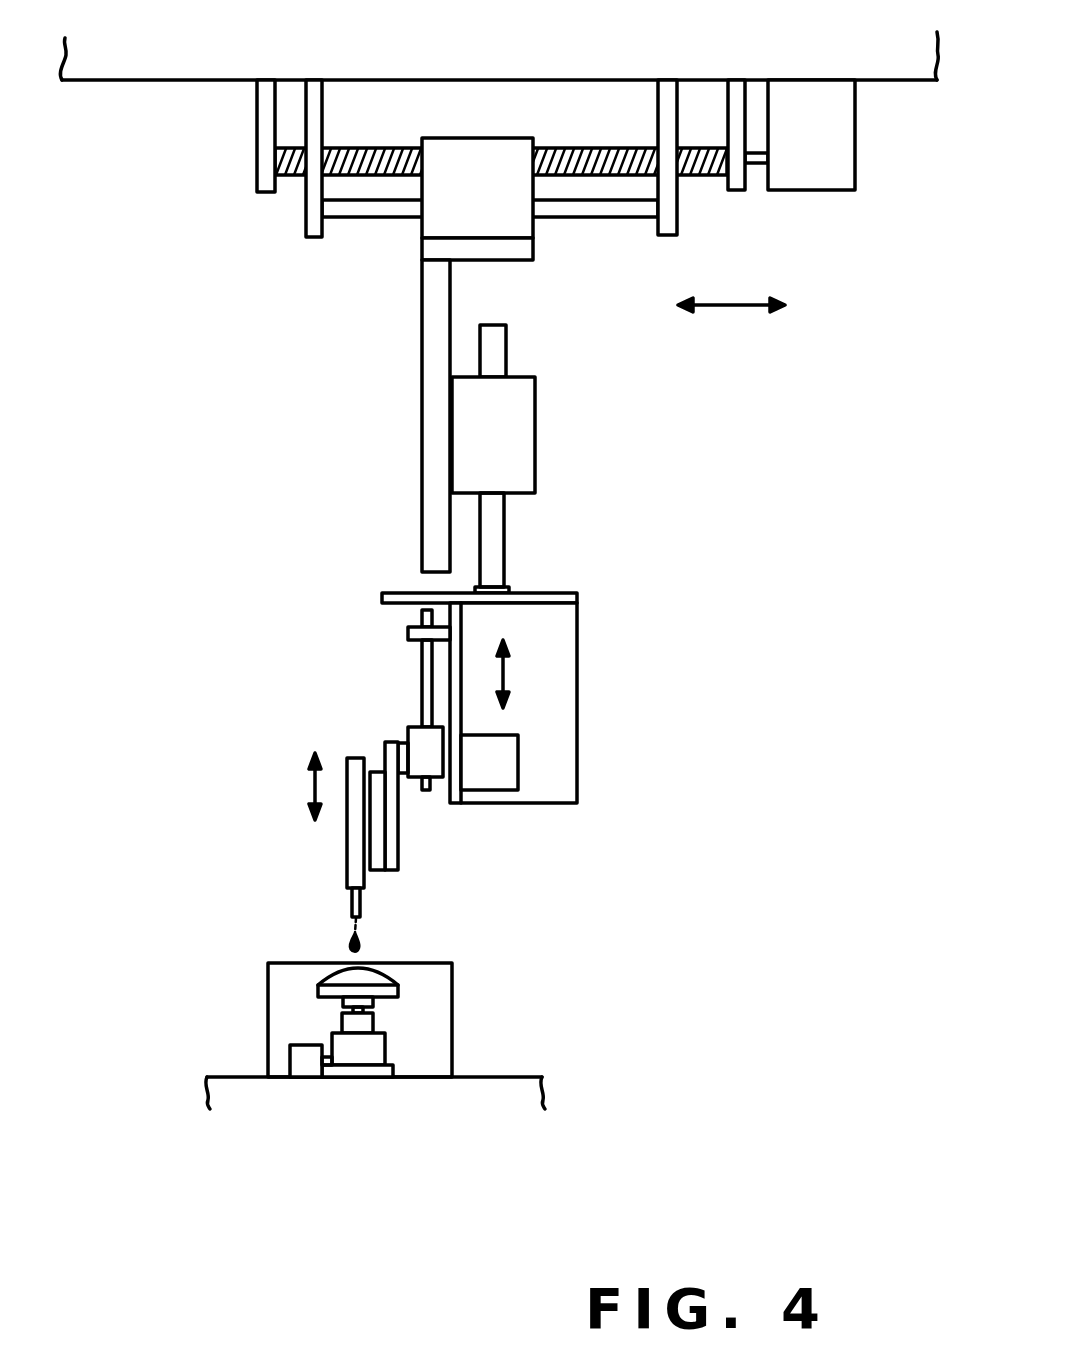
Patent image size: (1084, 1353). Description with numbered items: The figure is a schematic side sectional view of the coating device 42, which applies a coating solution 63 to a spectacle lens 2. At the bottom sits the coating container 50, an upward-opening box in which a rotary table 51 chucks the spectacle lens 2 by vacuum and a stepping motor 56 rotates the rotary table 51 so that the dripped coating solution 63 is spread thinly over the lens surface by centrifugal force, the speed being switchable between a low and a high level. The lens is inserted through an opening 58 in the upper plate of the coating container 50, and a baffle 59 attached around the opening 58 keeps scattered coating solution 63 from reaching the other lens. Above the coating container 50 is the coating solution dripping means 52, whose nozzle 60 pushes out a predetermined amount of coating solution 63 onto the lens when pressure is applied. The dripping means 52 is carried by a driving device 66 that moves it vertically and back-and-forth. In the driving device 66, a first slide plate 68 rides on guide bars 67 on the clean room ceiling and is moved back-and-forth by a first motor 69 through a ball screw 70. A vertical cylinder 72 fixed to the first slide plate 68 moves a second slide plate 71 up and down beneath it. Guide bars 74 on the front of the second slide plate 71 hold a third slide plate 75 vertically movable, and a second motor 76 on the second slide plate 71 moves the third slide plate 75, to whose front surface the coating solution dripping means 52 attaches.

The spectacle lens 2 is at (337, 962).
The coating device 42 is at (132, 629).
The coating container 50 is at (268, 1030).
The rotary table 51 is at (337, 1000).
The coating solution dripping means 52 is at (311, 830).
The stepping motor 56 is at (305, 1065).
The opening 58 is at (397, 962).
The baffle 59 is at (430, 963).
The nozzle 60 is at (350, 905).
The coating solution 63 is at (363, 942).
The driving device 66 is at (755, 507).
The guide bar 67 is at (604, 210).
The first slide plate 68 is at (420, 228).
The first motor 69 is at (828, 153).
The ball screw 70 is at (583, 148).
The second slide plate 71 is at (543, 637).
The vertical cylinder 72 is at (523, 430).
The guide bar 74 is at (422, 680).
The third slide plate 75 is at (385, 750).
The second motor 76 is at (512, 763).